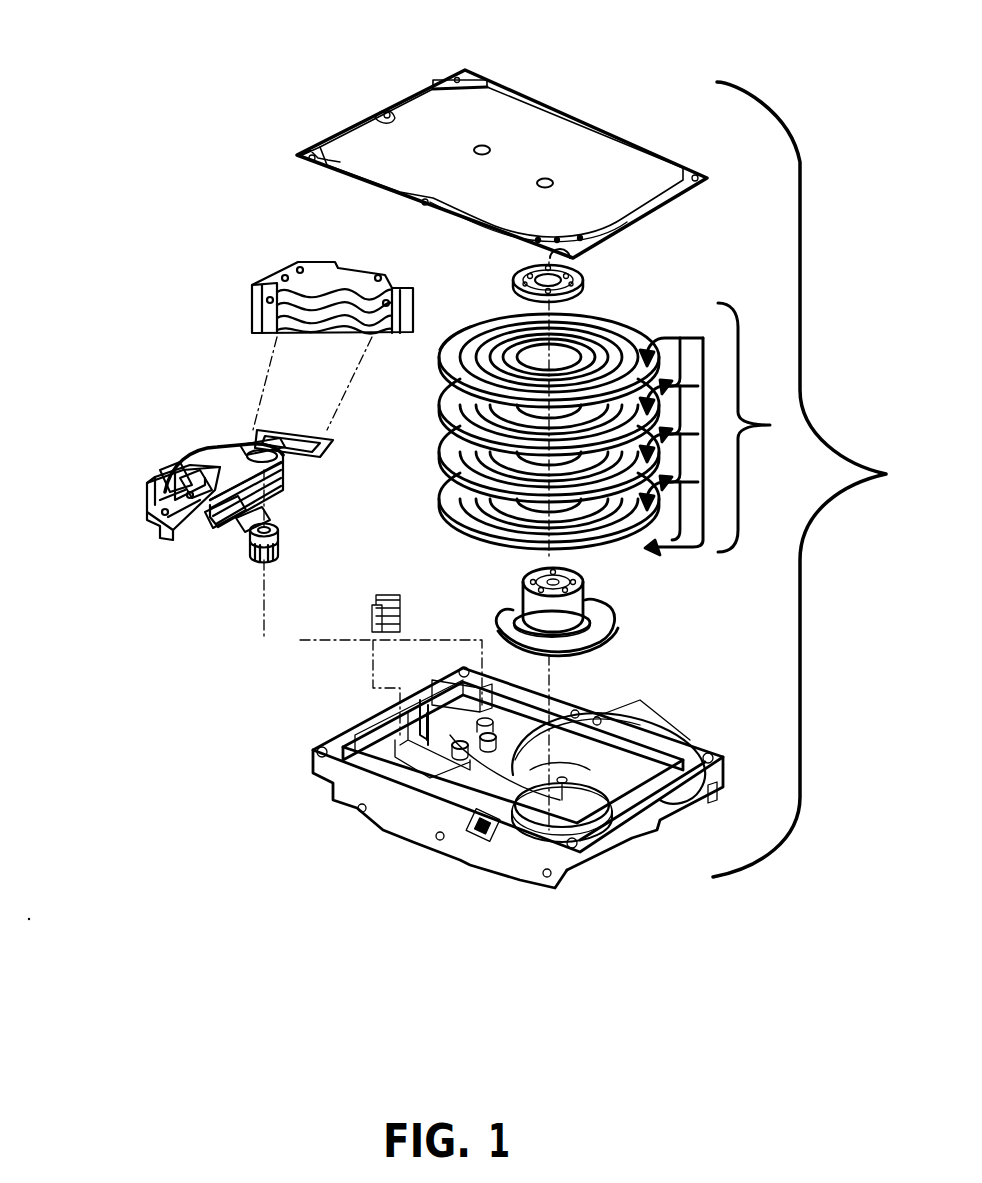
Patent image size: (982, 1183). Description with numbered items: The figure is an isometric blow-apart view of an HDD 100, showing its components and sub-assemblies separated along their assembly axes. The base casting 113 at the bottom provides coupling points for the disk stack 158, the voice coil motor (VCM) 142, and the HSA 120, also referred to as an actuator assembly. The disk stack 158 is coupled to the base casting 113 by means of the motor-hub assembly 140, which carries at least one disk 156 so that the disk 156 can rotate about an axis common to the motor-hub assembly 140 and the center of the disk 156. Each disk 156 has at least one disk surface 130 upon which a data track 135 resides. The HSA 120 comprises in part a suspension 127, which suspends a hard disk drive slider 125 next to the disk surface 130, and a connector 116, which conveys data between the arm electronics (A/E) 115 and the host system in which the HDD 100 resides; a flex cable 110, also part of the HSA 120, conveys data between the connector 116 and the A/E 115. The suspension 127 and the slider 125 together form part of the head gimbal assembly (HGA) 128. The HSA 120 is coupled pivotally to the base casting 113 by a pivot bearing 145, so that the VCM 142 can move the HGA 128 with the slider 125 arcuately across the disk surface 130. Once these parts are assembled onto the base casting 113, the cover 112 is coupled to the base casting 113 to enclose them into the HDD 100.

The HDD 100 is at (883, 458).
The flex cable 110 is at (210, 470).
The cover 112 is at (595, 172).
The base casting 113 is at (327, 772).
The arm electronics (A/E) 115 is at (240, 447).
The connector 116 is at (167, 477).
The head stack assembly (HSA) 120 is at (140, 453).
The hard disk drive slider 125 is at (210, 520).
The suspension 127 is at (185, 480).
The head gimbal assembly (HGA) 128 is at (243, 533).
The disk surface 130 is at (703, 338).
The data track 135 is at (498, 327).
The motor-hub assembly 140 is at (612, 613).
The voice coil motor (VCM) 142 is at (253, 447).
The pivot bearing 145 is at (258, 563).
The disk 156 is at (440, 503).
The disk stack 158 is at (770, 425).